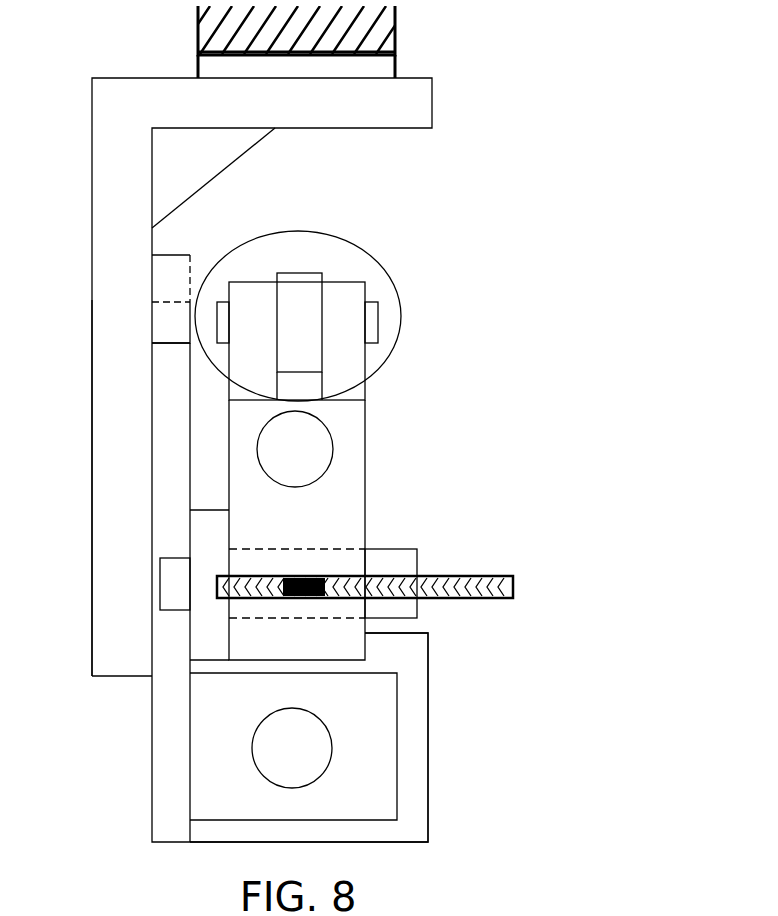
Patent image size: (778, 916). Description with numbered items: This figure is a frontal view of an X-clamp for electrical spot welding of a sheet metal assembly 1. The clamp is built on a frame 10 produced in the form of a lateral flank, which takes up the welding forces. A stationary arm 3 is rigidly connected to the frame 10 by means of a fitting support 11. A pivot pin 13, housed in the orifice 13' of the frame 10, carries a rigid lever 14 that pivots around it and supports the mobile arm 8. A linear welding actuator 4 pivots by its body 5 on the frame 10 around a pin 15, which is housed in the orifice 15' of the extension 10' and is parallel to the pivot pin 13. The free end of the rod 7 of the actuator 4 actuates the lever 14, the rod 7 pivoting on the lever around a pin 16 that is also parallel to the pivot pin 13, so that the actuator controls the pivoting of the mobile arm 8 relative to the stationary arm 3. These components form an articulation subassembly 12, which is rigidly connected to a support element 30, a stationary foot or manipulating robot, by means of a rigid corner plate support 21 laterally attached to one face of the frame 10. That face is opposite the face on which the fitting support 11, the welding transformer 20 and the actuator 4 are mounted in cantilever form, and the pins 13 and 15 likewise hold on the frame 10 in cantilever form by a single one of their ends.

The sheet metal assembly 1 is at (486, 574).
The stationary arm 3 is at (298, 748).
The welding actuator 4 is at (392, 273).
The body 5 is at (402, 313).
The rod 7 is at (307, 278).
The mobile arm 8 is at (300, 450).
The frame 10 is at (129, 592).
The extension 10' is at (108, 247).
The fitting support 11 is at (388, 797).
The articulation subassembly 12 is at (128, 704).
The pivot pin 13 is at (337, 556).
The orifice 13' is at (107, 623).
The rigid lever 14 is at (368, 497).
The pin 15 is at (111, 304).
The orifice 15' is at (108, 350).
The pin 16 is at (392, 345).
The welding transformer 20 is at (423, 656).
The rigid corner plate support 21 is at (125, 178).
The support element 30 is at (397, 32).